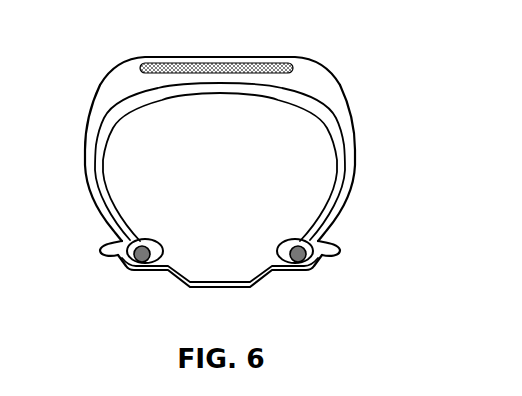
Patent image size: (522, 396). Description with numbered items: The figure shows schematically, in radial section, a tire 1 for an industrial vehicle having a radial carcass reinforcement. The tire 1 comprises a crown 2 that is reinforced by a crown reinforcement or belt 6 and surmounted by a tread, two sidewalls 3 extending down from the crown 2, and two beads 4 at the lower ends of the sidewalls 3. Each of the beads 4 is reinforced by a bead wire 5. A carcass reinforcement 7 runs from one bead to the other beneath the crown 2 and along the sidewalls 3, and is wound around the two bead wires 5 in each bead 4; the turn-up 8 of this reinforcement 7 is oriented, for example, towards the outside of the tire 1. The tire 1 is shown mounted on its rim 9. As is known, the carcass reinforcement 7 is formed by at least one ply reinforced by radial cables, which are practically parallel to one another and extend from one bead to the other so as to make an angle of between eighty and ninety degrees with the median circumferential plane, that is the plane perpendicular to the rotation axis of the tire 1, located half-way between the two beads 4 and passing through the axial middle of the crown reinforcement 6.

The tire 1 is at (243, 165).
The crown 2 is at (262, 57).
The sidewalls 3 is at (88, 162).
The beads 4 is at (149, 266).
The bead wire 5 is at (163, 251).
The crown reinforcement 6 is at (217, 63).
The carcass reinforcement 7 is at (101, 117).
The turn-up 8 is at (111, 229).
The rim 9 is at (123, 265).